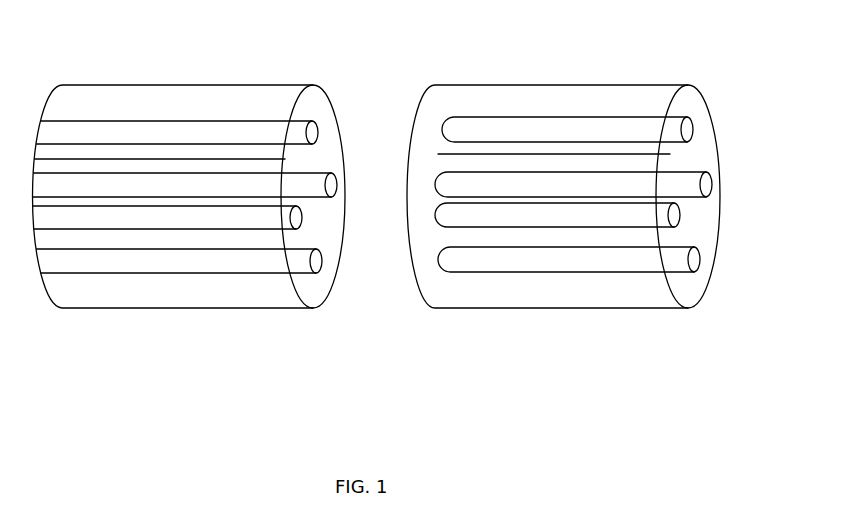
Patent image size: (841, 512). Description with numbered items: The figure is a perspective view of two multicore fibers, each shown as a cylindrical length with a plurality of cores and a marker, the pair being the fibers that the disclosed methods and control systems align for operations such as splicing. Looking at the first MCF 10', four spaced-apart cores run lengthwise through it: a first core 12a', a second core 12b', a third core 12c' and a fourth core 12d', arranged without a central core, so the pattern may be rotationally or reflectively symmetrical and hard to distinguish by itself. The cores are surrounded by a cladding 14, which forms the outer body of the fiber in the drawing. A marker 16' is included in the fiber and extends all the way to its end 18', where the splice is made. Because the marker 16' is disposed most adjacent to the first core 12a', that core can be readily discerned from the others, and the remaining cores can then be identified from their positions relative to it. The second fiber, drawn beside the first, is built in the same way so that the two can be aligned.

The first multicore fiber 10' is at (218, 187).
The first core 12a' is at (178, 83).
The second core 12b' is at (218, 238).
The third core 12c' is at (180, 300).
The fourth core 12d' is at (167, 128).
The cladding 14 is at (105, 292).
The marker 16' is at (212, 141).
The end 18' is at (328, 185).